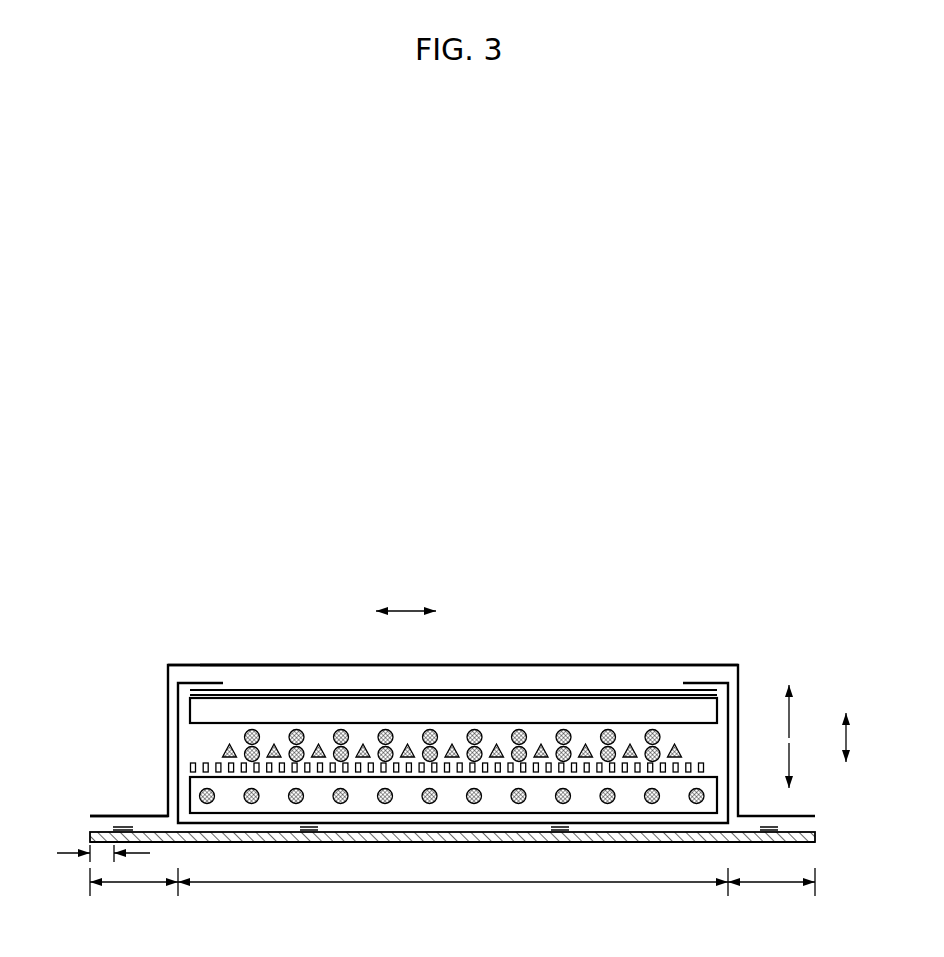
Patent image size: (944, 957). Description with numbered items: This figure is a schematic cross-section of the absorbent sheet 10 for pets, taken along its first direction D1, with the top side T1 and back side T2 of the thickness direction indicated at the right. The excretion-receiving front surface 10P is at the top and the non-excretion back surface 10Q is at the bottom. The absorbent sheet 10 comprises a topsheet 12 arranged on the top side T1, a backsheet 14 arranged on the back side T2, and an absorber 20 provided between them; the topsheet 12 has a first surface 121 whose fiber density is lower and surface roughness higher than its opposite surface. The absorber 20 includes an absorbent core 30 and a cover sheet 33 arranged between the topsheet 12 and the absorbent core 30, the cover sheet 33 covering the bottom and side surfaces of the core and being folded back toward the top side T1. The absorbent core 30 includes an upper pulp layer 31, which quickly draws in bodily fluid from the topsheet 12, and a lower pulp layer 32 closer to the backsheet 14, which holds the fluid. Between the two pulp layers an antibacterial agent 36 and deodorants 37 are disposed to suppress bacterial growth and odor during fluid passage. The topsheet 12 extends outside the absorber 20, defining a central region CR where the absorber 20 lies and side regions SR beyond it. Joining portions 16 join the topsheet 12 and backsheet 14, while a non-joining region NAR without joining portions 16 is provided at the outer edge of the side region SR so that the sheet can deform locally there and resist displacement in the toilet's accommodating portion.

The absorbent sheet for pets 10 is at (673, 630).
The front surface 10P is at (493, 665).
The back surface 10Q is at (815, 840).
The topsheet 12 is at (352, 665).
The first surface 121 is at (242, 665).
The backsheet 14 is at (90, 837).
The joining portions 16 is at (127, 817).
The absorber 20 is at (713, 679).
The absorbent core 30 is at (160, 683).
The upper pulp layer 31 is at (428, 706).
The lower pulp layer 32 is at (545, 792).
The cover sheet 33 is at (238, 690).
The antibacterial agent 36 is at (300, 758).
The deodorants 37 is at (497, 752).
The first direction D1 is at (406, 595).
The top side T1 is at (809, 711).
The back side T2 is at (817, 750).
The non-joining region NAR is at (100, 858).
The side regions SR is at (452, 891).
The central region CR is at (453, 898).